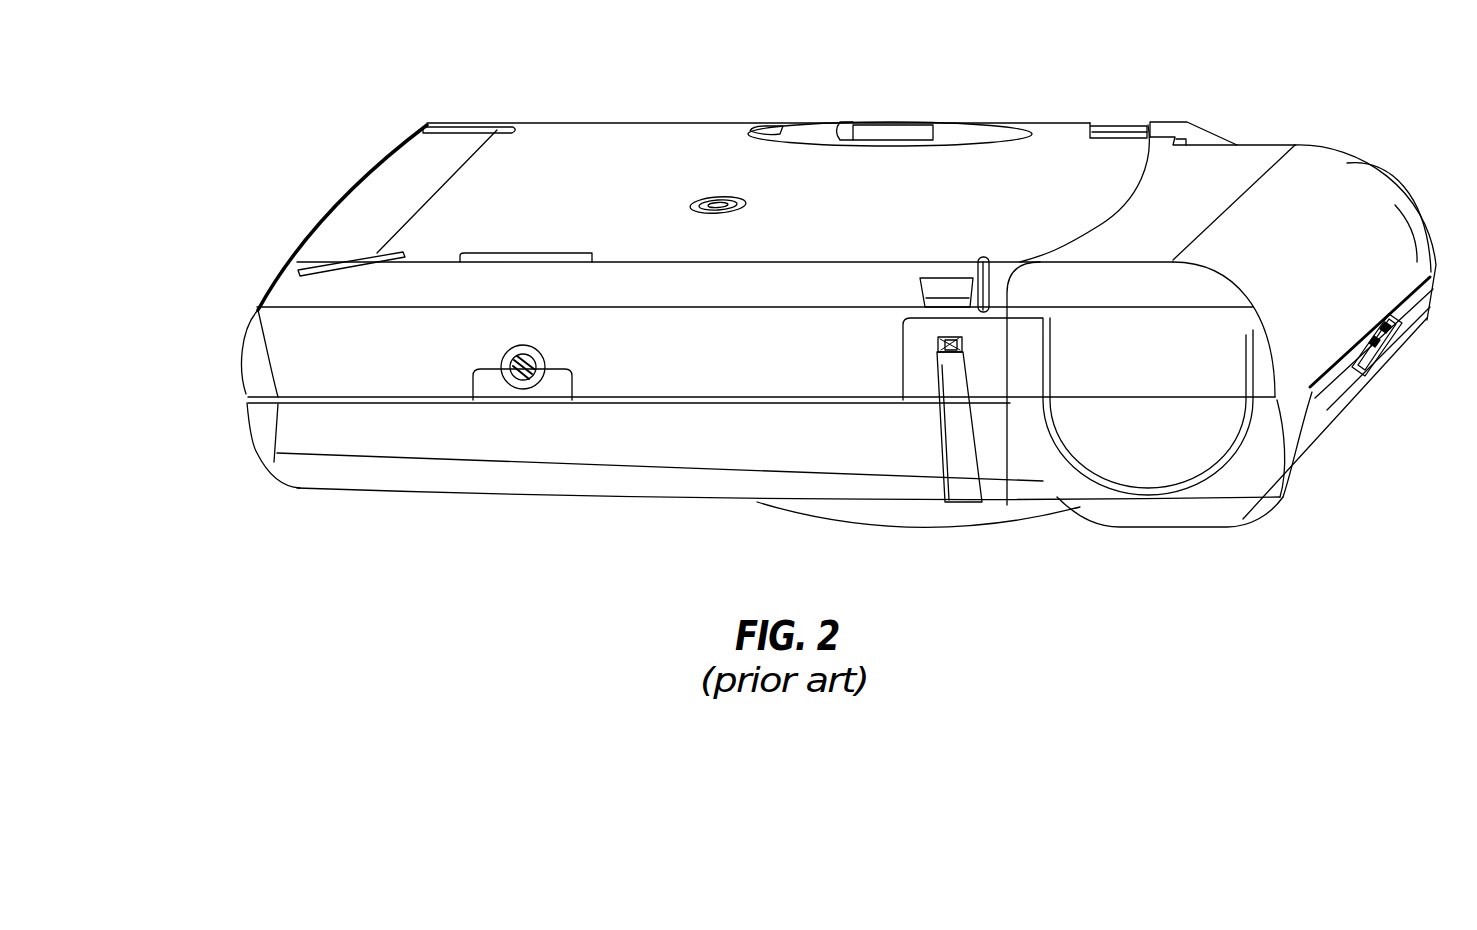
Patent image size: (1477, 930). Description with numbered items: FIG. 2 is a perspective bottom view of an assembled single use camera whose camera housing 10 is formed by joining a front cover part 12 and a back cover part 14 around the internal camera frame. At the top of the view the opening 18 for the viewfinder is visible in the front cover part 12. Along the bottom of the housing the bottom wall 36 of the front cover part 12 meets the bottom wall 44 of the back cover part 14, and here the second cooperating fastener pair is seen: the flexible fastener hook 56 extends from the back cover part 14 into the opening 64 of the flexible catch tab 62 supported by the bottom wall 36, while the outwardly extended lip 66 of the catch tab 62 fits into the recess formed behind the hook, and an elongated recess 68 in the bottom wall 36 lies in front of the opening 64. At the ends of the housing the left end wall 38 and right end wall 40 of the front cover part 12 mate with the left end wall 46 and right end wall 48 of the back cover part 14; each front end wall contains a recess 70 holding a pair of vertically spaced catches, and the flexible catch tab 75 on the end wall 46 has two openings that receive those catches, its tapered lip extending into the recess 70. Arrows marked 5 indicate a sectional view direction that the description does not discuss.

The camera housing 10 is at (216, 381).
The front cover part 12 is at (727, 500).
The back cover part 14 is at (627, 133).
The opening for a viewfinder 18 is at (902, 105).
The bottom wall 36 is at (458, 447).
The left end wall 38 is at (1327, 433).
The right end wall 40 is at (253, 453).
The bottom wall 44 is at (277, 332).
The left end wall 46 is at (1383, 238).
The right end wall 48 is at (410, 173).
The flexible fastener hook 56 is at (940, 341).
The flexible catch tab 62 is at (960, 307).
The opening 64 is at (957, 358).
The outwardly extended lip 66 is at (940, 312).
The elongated recess 68 is at (957, 443).
The recess 70 is at (1390, 363).
The flexible catch tab 75 is at (1380, 340).
The section line 5- 5 is at (840, 340).